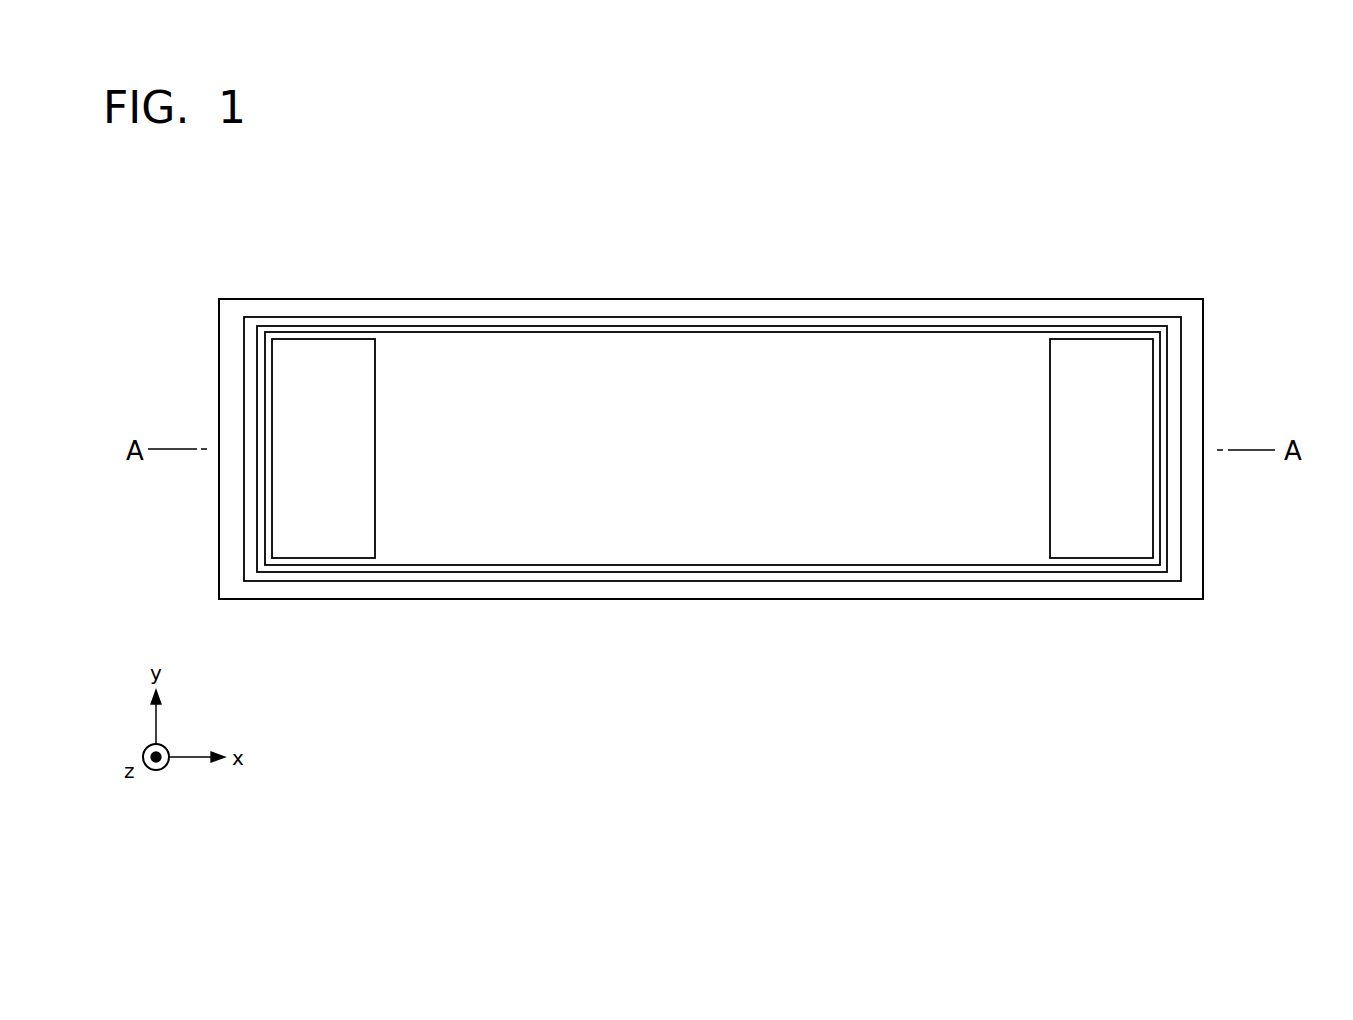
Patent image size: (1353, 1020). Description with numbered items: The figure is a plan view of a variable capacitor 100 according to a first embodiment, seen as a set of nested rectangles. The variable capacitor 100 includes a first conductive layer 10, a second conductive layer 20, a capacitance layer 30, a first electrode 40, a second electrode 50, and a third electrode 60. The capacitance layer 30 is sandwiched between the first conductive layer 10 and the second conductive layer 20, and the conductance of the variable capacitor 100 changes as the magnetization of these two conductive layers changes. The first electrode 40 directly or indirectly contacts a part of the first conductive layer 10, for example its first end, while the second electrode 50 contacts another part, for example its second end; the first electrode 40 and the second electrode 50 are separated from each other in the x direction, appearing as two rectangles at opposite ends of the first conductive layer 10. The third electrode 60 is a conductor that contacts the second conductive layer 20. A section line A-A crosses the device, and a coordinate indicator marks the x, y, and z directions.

The variable capacitor 100 is at (1020, 222).
The first conductive layer 10 is at (403, 342).
The second conductive layer 20 is at (515, 322).
The capacitance layer 30 is at (464, 330).
The first electrode 40 is at (318, 360).
The second electrode 50 is at (1101, 358).
The third electrode 60 is at (576, 305).